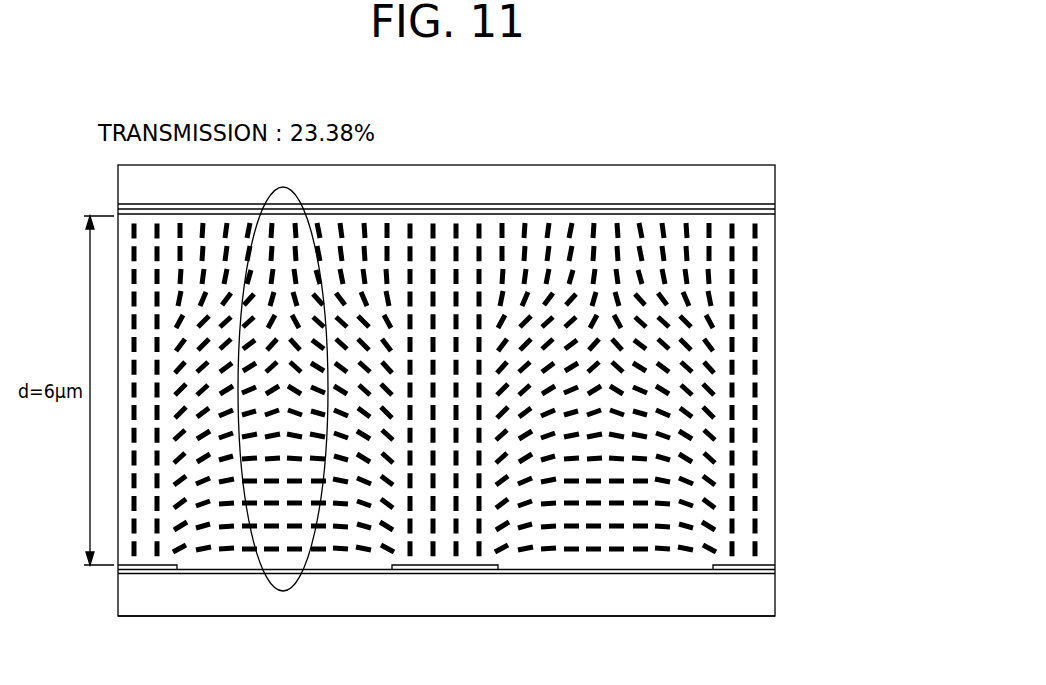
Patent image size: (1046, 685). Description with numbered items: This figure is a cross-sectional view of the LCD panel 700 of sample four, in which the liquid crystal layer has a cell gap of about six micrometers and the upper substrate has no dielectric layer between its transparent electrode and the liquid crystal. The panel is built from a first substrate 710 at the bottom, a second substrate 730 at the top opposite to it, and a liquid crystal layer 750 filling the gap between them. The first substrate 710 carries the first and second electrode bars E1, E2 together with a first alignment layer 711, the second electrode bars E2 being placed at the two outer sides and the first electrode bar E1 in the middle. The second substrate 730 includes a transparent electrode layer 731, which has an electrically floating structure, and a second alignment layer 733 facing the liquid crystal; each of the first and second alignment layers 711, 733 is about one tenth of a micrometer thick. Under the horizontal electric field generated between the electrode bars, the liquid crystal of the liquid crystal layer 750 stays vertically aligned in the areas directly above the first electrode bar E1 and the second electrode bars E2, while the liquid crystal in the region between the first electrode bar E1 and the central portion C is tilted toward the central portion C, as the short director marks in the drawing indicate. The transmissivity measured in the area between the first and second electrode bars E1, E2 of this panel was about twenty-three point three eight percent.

The LCD panel 700 is at (405, 106).
The first substrate 710 is at (773, 598).
The first alignment layer 711 is at (777, 568).
The second substrate 730 is at (775, 176).
The transparent electrode layer 731 is at (775, 206).
The second alignment layer 733 is at (775, 214).
The liquid crystal layer 750 is at (790, 214).
The first electrode bar E1 is at (447, 575).
The second electrode bar E2 is at (742, 633).
The central portion C is at (283, 591).